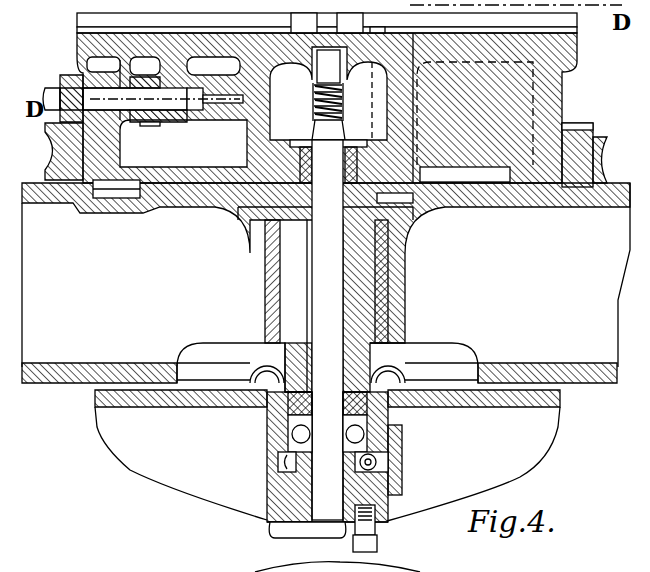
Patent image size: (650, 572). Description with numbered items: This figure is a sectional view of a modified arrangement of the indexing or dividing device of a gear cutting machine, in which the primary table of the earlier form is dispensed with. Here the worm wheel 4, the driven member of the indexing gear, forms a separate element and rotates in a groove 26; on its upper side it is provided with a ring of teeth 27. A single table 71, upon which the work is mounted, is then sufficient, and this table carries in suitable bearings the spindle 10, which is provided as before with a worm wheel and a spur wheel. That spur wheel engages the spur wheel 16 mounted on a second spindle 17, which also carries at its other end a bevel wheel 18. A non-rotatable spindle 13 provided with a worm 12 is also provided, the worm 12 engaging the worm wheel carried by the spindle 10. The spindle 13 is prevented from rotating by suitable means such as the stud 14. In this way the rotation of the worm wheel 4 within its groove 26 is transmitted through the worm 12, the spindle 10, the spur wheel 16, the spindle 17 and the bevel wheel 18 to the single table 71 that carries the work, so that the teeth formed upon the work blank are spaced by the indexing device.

The worm wheel 4 is at (594, 157).
The spindle 10 is at (215, 102).
The worm 12 is at (318, 102).
The spindle 13 is at (330, 503).
The stud 14 is at (378, 523).
The spur wheel 16 is at (153, 117).
The spindle 17 is at (113, 105).
The bevel wheel 18 is at (58, 128).
The groove 26 is at (572, 195).
The ring of teeth 27 is at (593, 117).
The table 71 is at (520, 90).